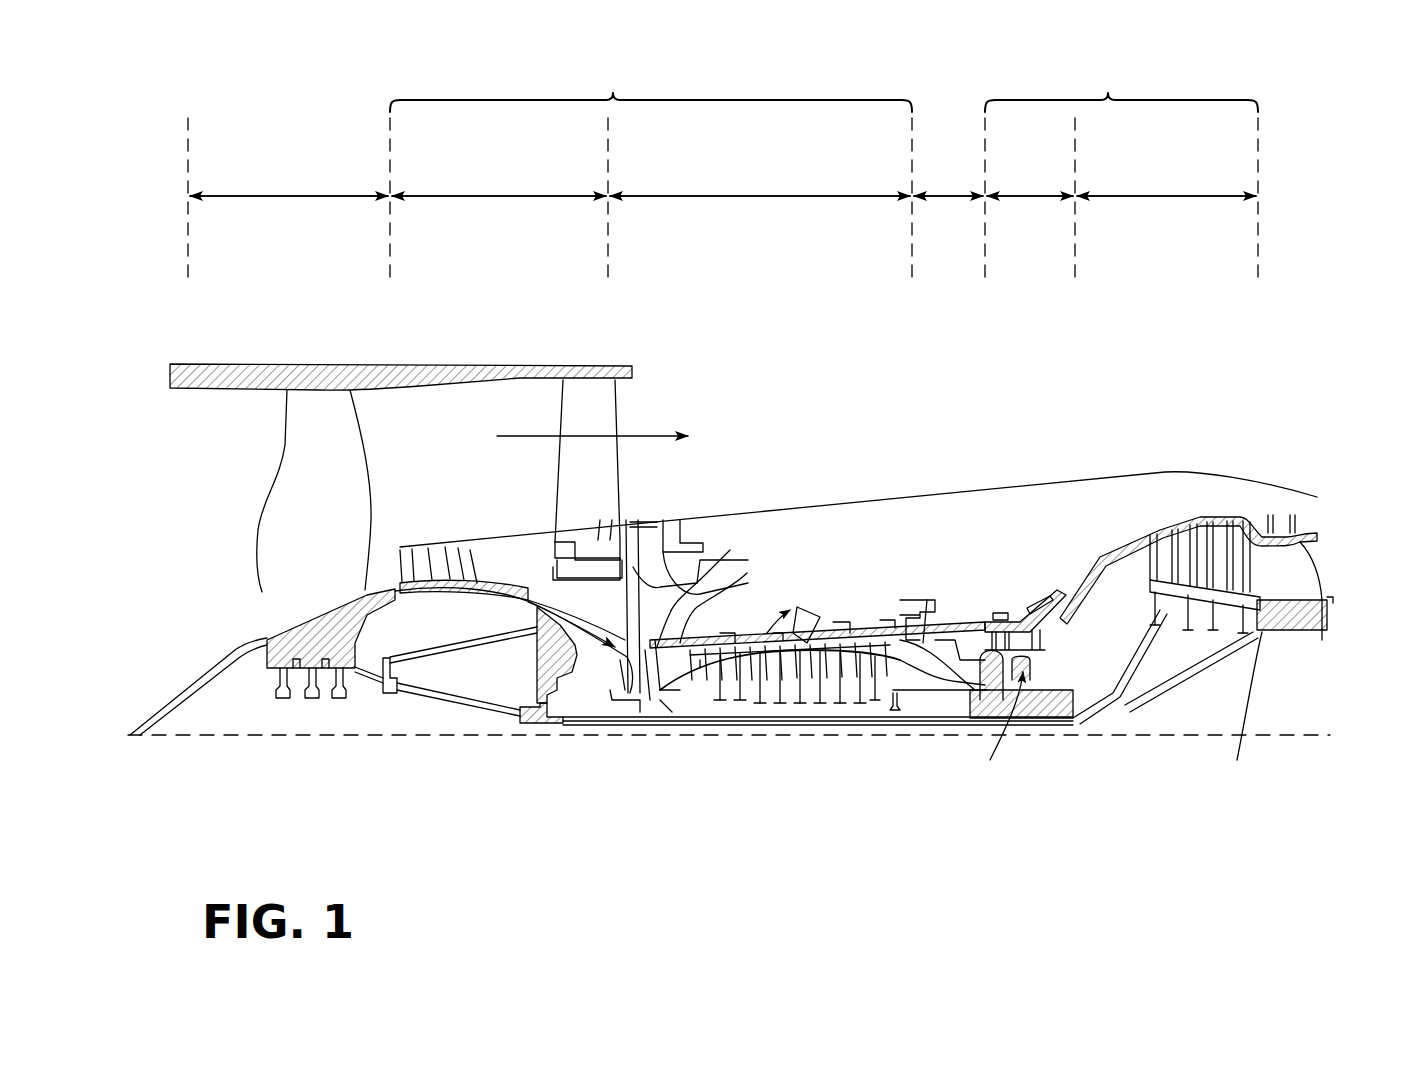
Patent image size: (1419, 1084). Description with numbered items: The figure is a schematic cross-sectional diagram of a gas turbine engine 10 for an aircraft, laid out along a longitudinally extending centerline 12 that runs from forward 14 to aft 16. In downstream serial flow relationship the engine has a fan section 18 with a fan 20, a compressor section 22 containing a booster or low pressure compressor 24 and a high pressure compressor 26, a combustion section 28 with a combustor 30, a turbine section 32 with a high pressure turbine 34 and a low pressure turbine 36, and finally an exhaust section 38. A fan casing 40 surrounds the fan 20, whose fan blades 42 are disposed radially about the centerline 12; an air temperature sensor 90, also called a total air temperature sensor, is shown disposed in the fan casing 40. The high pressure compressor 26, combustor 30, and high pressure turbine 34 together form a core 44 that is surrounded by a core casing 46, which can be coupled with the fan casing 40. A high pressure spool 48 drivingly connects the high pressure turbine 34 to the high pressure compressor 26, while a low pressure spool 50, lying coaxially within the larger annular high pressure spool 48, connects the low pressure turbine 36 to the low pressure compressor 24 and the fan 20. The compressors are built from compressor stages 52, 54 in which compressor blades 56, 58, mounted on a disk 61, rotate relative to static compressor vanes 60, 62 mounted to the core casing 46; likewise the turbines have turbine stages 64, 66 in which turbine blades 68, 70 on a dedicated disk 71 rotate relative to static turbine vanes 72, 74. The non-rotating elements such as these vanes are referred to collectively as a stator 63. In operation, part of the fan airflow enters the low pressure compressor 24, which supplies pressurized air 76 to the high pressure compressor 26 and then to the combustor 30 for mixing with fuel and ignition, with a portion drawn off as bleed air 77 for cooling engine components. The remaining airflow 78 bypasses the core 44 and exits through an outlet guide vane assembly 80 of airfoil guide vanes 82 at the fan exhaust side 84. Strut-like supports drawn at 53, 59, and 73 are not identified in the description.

The gas turbine engine 10 is at (942, 357).
The centerline 12 is at (290, 737).
The forward 14 is at (165, 499).
The aft 16 is at (1378, 584).
The fan section 18 is at (289, 198).
The fan 20 is at (225, 578).
The compressor section 22 is at (651, 85).
The low pressure compressor 24 is at (500, 198).
The high pressure compressor 26 is at (761, 198).
The combustion section 28 is at (949, 198).
The combustor 30 is at (950, 640).
The turbine section 32 is at (1121, 84).
The high pressure turbine 34 is at (1031, 198).
The low pressure turbine 36 is at (1167, 198).
The exhaust section 38 is at (1325, 540).
The fan casing 40 is at (433, 370).
The fan blades 42 is at (350, 438).
The core 44 is at (895, 535).
The core casing 46 is at (1128, 545).
The HP spool 48 is at (925, 698).
The LP spool 50 is at (538, 727).
The compressor stages 52 is at (452, 480).
The strut 53 is at (490, 604).
The compressor stages 54 is at (745, 533).
The compressor blades 56 is at (430, 550).
The compressor blades 58 is at (700, 610).
The platform 59 is at (417, 590).
The static compressor vanes 60 is at (402, 550).
The disk 61 is at (666, 698).
The static compressor vanes 62 is at (698, 583).
The stator 63 is at (662, 695).
The turbine stages 64 is at (980, 538).
The turbine stages 66 is at (1245, 412).
The turbine blades 68 is at (1010, 630).
The turbine blades 70 is at (1243, 530).
The disk 71 is at (1014, 722).
The static turbine vanes 72 is at (993, 620).
The strut 73 is at (1242, 710).
The static turbine vanes 74 is at (1218, 525).
The pressurized air 76 is at (605, 612).
The bleed air 77 is at (773, 612).
The airflow 78 is at (500, 436).
The outlet guide vane assembly 80 is at (633, 490).
The airfoil guide vanes 82 is at (572, 475).
The fan exhaust side 84 is at (657, 394).
The air temperature sensor 90 is at (628, 705).